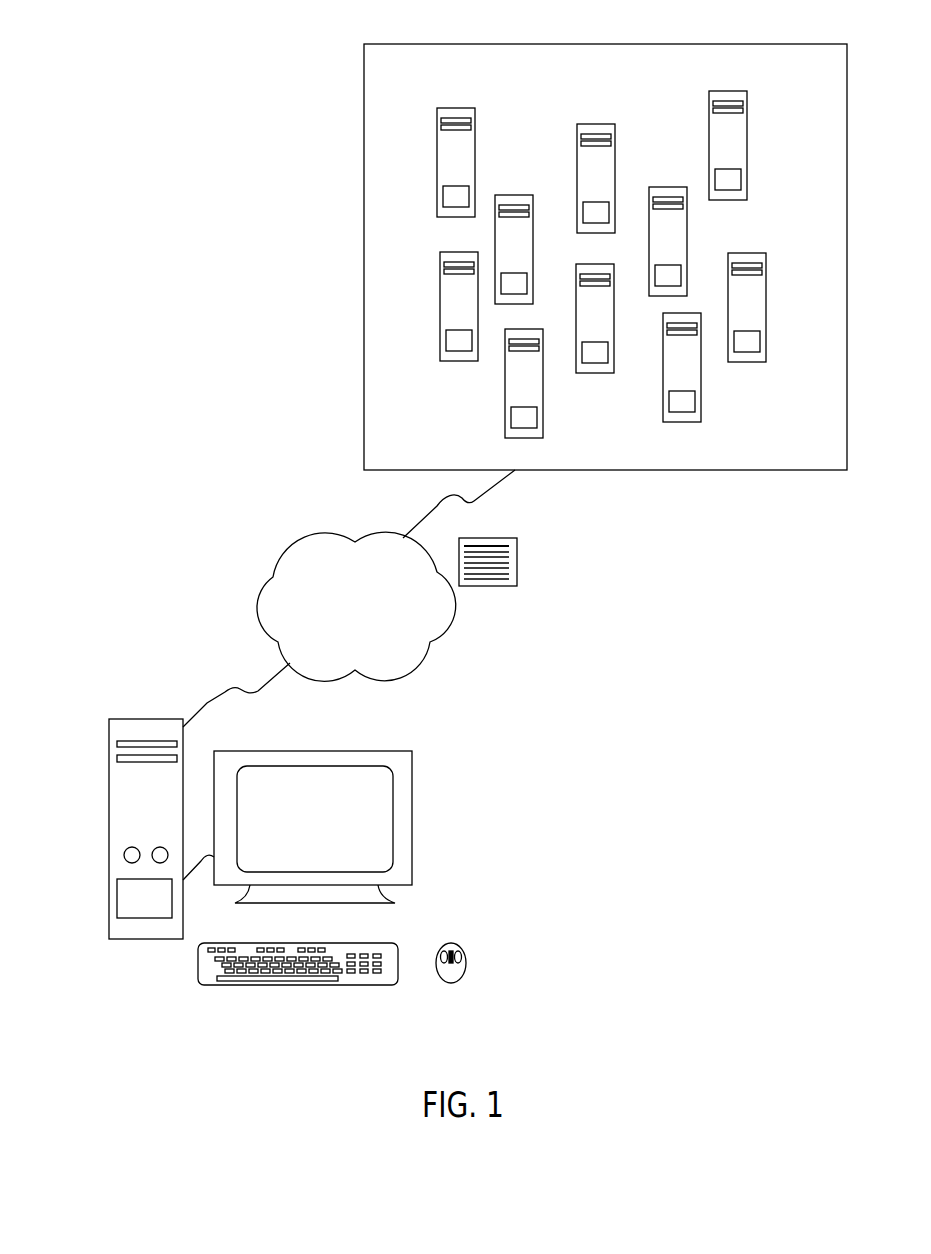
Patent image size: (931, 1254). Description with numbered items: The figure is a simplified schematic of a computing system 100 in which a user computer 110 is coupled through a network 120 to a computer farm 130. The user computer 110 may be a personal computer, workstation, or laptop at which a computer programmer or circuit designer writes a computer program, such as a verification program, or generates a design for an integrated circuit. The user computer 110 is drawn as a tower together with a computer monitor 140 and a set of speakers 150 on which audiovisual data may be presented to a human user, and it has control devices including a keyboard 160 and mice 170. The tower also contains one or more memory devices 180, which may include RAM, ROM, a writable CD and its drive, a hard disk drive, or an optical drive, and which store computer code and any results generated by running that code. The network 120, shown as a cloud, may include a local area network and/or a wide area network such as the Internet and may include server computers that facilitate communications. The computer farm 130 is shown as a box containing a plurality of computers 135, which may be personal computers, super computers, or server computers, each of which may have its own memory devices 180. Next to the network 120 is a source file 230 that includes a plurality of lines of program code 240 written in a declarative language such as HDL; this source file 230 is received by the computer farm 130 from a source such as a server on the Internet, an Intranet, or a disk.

The computing system 100 is at (721, 1054).
The user computer 110 is at (128, 851).
The network 120 is at (370, 621).
The computer farm 130 is at (821, 458).
The computers 135 is at (708, 152).
The computer monitor 140 is at (244, 748).
The set of speakers 150 is at (124, 858).
The keyboard 160 is at (260, 988).
The mice 170 is at (470, 952).
The memory devices 180 is at (118, 744).
The source file 230 is at (483, 538).
The lines of program code 240 is at (508, 565).